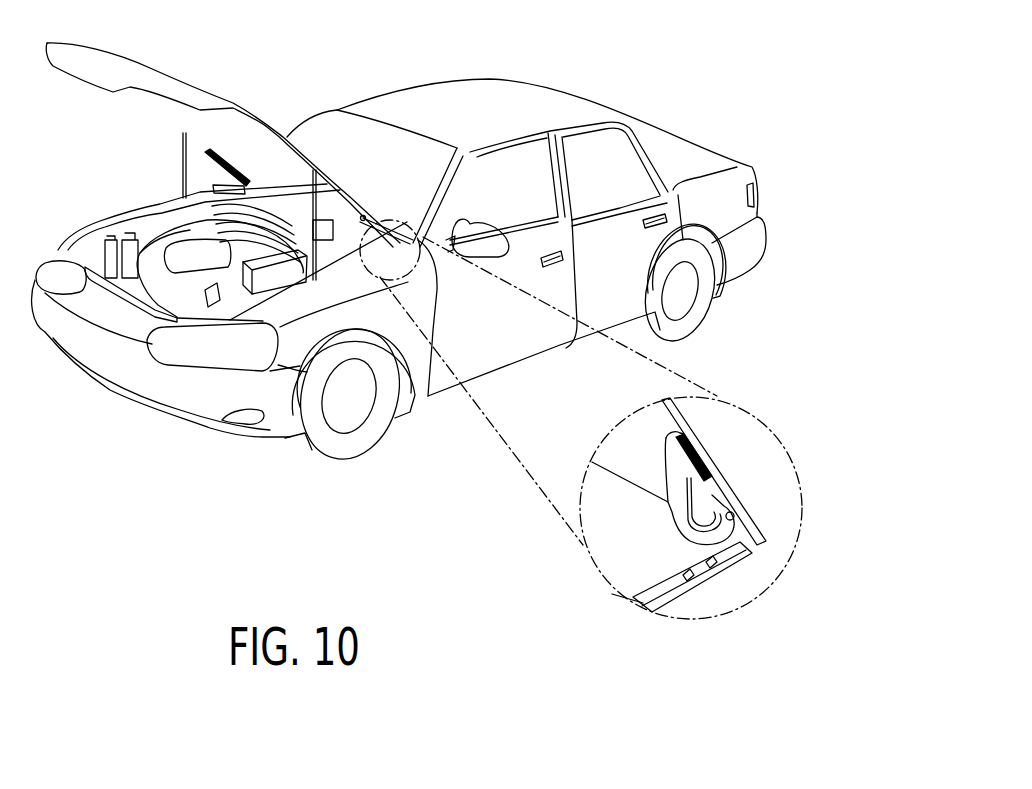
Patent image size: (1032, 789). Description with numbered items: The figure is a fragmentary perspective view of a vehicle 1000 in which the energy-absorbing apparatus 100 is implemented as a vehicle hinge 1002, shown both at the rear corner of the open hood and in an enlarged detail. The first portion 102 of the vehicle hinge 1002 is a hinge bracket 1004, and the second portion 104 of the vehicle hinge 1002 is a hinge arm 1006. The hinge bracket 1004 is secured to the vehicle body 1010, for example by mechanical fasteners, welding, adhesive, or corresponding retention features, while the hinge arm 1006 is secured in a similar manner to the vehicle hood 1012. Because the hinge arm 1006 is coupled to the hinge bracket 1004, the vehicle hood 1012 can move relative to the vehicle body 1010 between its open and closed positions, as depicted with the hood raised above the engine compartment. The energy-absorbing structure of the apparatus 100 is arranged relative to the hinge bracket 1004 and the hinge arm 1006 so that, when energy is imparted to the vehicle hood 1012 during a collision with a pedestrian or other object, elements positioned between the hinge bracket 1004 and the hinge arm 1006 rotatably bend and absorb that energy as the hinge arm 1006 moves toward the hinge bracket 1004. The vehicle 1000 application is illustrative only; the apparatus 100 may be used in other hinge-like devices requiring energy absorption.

The vehicle 1000 is at (639, 105).
The vehicle hood 1012 is at (174, 105).
The vehicle body 1010 is at (300, 340).
The apparatus 100 is at (612, 321).
The vehicle hinge 1002 is at (612, 321).
The second portion 104 is at (683, 473).
The hinge arm 1006 is at (553, 499).
The first portion 102 is at (586, 584).
The hinge bracket 1004 is at (586, 584).